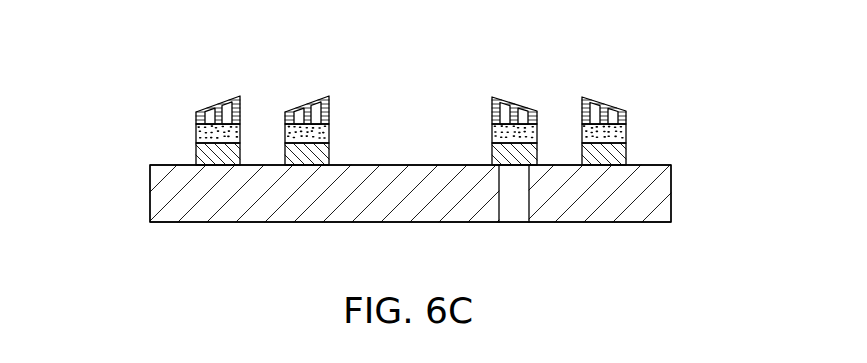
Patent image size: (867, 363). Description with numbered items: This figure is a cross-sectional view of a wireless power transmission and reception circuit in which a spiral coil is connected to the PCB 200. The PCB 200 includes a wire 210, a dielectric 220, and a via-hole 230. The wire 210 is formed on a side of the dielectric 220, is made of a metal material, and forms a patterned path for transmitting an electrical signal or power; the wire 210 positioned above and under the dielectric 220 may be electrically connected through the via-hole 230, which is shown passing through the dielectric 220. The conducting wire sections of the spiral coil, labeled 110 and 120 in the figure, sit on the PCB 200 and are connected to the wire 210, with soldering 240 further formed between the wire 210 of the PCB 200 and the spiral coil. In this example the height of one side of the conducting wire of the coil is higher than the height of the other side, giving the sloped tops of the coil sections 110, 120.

The first micro structure 110 is at (492, 98).
The second micro structure 120 is at (581, 99).
The PCB 200 is at (402, 220).
The wire 210 is at (623, 155).
The dielectric 220 is at (655, 195).
The via-hole 230 is at (515, 212).
The soldering 240 is at (623, 131).